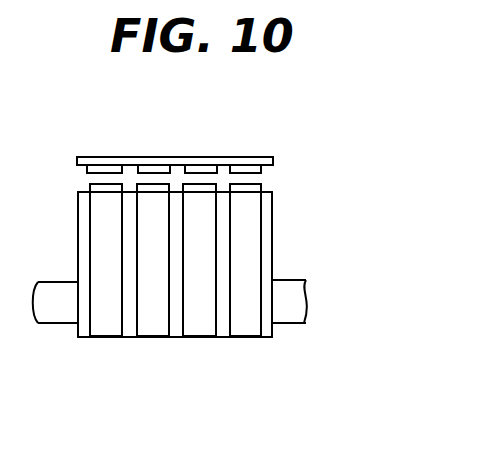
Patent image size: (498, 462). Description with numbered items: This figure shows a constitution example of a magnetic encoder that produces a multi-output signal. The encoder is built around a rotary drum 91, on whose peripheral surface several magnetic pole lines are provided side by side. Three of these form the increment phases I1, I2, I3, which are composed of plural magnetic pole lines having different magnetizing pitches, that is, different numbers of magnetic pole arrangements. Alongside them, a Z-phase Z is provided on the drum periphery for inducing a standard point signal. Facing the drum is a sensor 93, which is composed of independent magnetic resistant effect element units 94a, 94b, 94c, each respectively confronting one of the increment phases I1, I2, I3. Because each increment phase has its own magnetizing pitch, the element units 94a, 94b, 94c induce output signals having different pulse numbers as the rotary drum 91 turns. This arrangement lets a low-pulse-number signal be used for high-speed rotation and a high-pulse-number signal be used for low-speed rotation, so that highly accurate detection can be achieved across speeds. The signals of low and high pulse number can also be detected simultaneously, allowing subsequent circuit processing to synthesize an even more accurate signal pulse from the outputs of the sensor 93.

The rotary drum 91 is at (272, 245).
The sensor 93 is at (243, 155).
The magnetic resistant effect element unit 94a is at (159, 157).
The magnetic resistant effect element unit 94b is at (200, 157).
The magnetic resistant effect element unit 94c is at (250, 168).
The Z-phase Z is at (105, 325).
The increment phase I1 is at (152, 330).
The increment phase I2 is at (197, 333).
The increment phase I3 is at (240, 330).